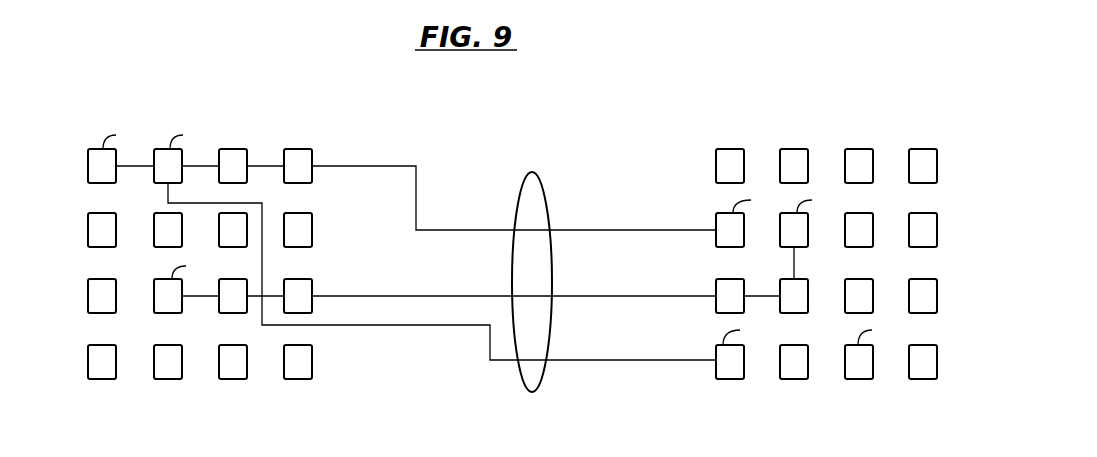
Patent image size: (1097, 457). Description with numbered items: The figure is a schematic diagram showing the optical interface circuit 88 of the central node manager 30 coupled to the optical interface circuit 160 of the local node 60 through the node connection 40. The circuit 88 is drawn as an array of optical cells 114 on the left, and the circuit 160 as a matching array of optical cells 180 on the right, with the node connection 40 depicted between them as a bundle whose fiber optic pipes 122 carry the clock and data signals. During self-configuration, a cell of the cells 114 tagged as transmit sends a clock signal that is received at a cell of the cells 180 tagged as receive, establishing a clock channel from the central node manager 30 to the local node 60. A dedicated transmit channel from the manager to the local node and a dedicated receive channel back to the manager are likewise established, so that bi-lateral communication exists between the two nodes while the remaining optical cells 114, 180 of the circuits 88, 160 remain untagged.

The central node manager 30 is at (315, 128).
The local node 60 is at (712, 128).
The node connection 40 is at (536, 178).
The fiber optic pipe 122 is at (594, 296).
The optical cells 114 is at (177, 379).
The optical cells 180 is at (736, 379).
The optical interface circuit 88 is at (334, 375).
The optical interface circuit 160 is at (696, 379).